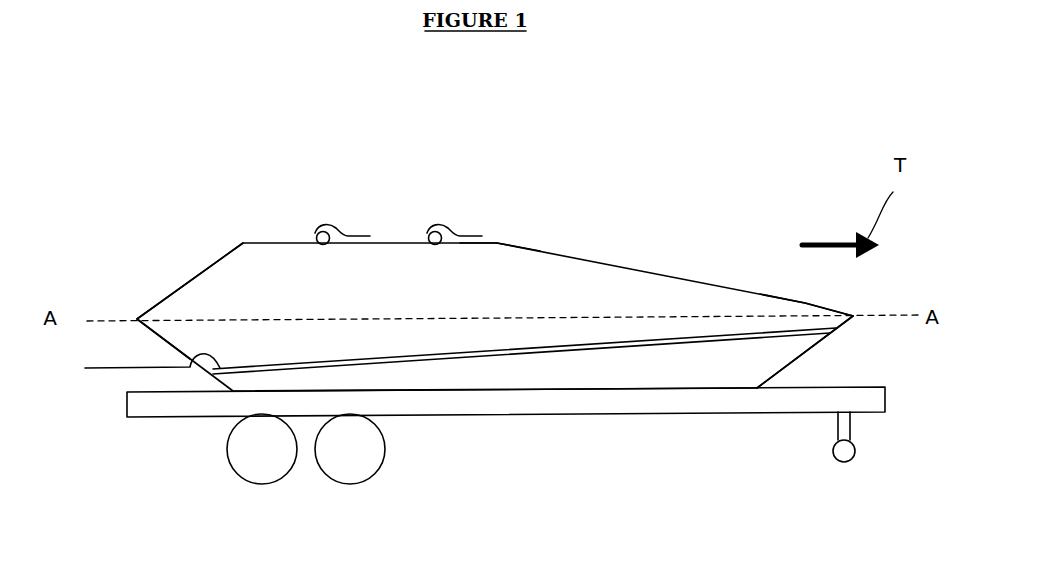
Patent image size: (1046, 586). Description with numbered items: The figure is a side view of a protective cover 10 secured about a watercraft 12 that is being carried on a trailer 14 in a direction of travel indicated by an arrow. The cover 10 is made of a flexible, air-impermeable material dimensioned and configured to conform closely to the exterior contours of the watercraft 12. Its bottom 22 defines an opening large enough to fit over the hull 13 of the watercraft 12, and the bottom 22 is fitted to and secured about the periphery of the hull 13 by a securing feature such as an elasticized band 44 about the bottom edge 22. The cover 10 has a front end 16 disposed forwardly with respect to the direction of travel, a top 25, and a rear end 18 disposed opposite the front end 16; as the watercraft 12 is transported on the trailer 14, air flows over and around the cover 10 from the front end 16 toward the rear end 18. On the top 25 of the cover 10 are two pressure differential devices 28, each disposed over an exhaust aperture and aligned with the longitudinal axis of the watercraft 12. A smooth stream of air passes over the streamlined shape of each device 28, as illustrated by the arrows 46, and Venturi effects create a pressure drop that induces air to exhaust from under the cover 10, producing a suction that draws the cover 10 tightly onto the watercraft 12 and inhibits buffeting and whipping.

The protective cover 10 is at (560, 265).
The watercraft 12 is at (700, 365).
The hull 13 is at (780, 353).
The trailer 14 is at (147, 418).
The front end 16 is at (805, 303).
The rear end 18 is at (163, 301).
The bottom 22 is at (487, 355).
The top 25 is at (496, 243).
The pressure differential device 28 is at (323, 245).
The elasticized band 44 is at (133, 367).
The arrows 46 is at (300, 228).